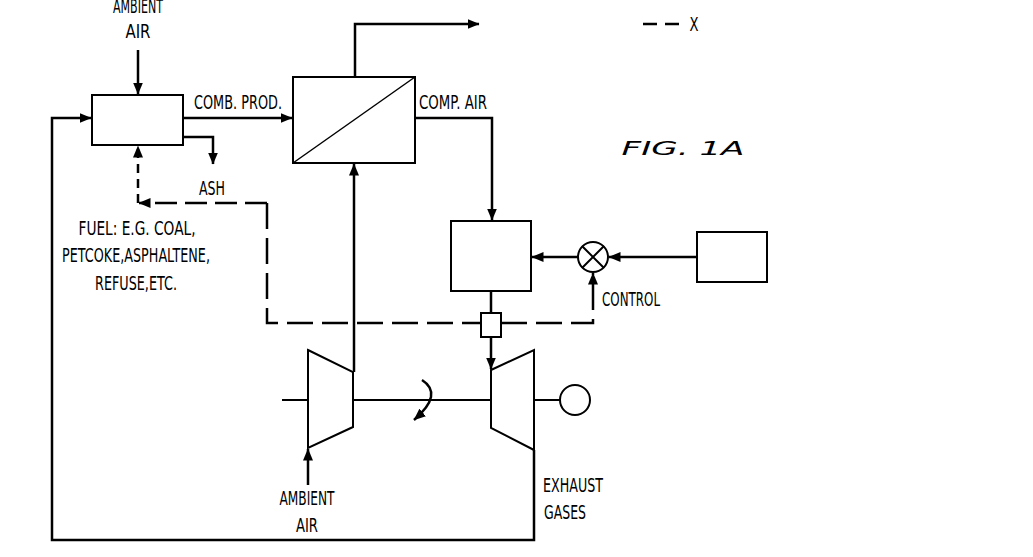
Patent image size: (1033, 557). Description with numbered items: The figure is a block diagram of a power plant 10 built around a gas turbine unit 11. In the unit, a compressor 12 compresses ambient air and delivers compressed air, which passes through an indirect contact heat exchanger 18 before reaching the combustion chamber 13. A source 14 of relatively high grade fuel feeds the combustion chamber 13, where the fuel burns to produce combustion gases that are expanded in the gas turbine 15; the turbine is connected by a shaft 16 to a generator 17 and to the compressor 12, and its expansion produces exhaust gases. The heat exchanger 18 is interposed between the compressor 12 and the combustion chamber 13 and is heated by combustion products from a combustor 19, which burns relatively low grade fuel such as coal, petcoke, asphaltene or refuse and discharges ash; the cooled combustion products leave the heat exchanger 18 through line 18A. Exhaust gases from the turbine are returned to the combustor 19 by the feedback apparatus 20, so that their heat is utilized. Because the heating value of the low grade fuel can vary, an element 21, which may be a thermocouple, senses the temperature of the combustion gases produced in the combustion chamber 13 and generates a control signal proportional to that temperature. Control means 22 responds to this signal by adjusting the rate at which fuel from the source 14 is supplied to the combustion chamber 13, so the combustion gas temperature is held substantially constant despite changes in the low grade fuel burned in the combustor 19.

The power plant 10 is at (528, 110).
The gas turbine unit 11 is at (447, 431).
The compressor 12 is at (308, 428).
The combustion chamber 13 is at (517, 221).
The source of relatively high grade fuel 14 is at (733, 232).
The gas turbine 15 is at (538, 370).
The shaft 16 is at (381, 400).
The generator 17 is at (575, 415).
The indirect contact heat exchanger 18 is at (387, 77).
The line 18A is at (355, 29).
The combustor 19 is at (93, 95).
The apparatus for feeding back exhaust gases 20 is at (435, 540).
The element for generating a control signal 21 is at (481, 318).
The control means 22 is at (594, 240).